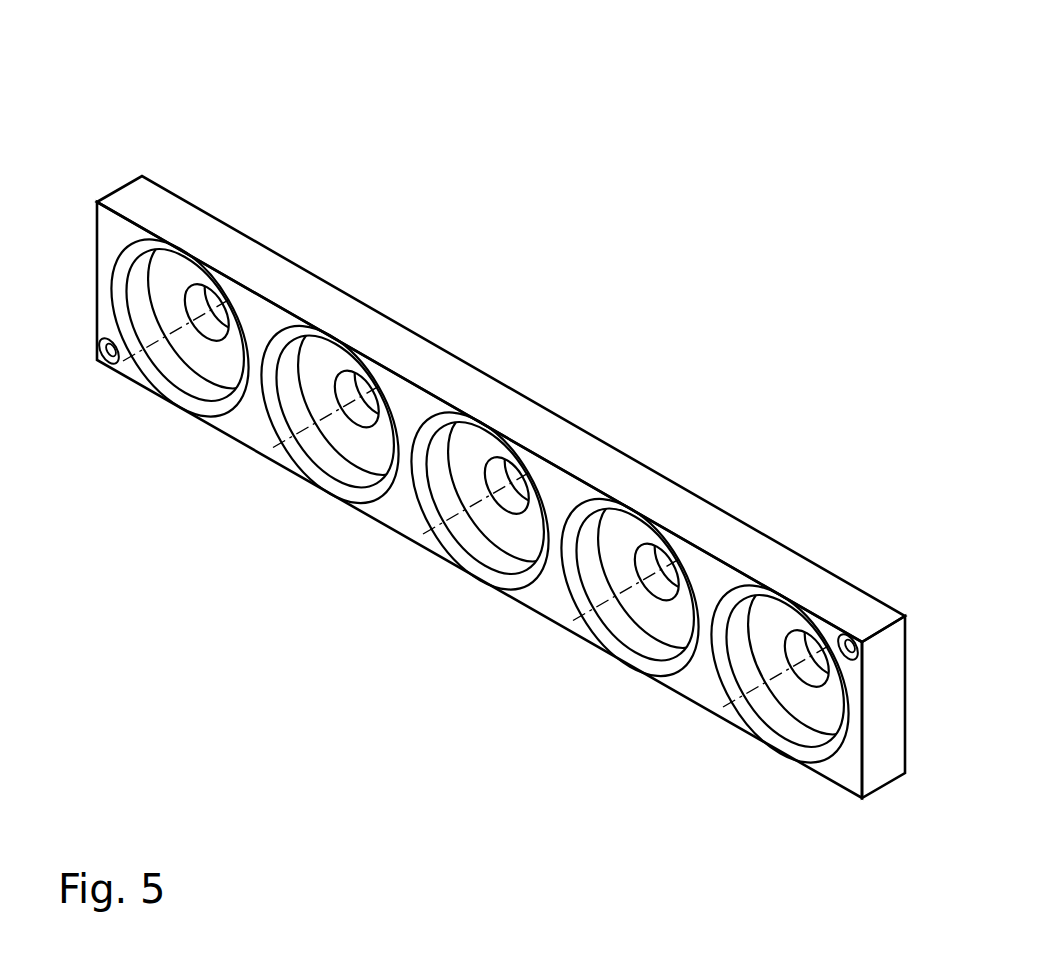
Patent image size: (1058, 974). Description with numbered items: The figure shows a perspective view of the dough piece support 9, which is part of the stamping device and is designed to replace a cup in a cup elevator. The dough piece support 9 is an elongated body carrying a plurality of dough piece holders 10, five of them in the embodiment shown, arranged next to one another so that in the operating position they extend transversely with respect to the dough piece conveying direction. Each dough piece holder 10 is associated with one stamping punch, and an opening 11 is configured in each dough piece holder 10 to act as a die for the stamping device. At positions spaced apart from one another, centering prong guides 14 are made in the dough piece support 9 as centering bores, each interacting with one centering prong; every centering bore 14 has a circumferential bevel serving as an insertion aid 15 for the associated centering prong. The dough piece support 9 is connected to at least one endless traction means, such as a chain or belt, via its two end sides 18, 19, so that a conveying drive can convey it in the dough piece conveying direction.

The dough piece support 9 is at (500, 450).
The dough piece holder 10 is at (310, 447).
The opening 11 is at (360, 390).
The centering prong guide 14 is at (117, 367).
The insertion aid 15 is at (108, 359).
The end side 18 is at (116, 193).
The end side 19 is at (878, 772).